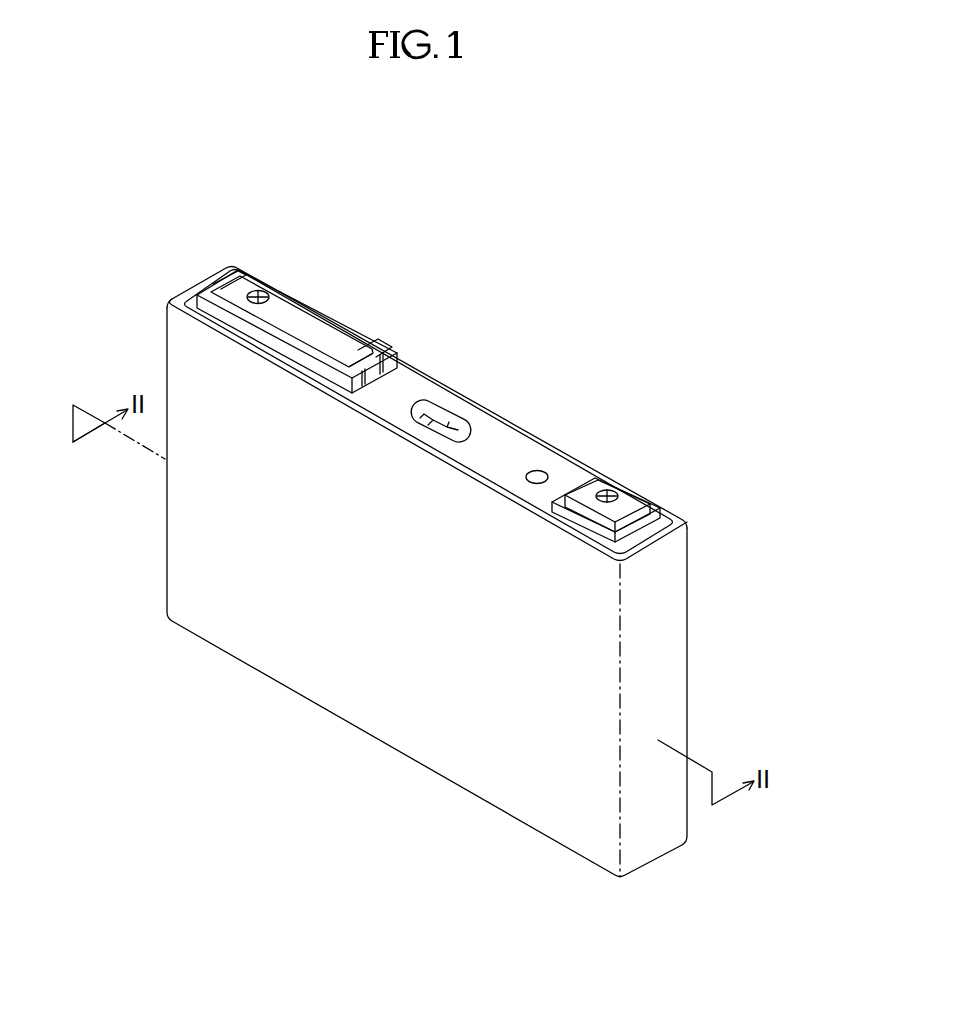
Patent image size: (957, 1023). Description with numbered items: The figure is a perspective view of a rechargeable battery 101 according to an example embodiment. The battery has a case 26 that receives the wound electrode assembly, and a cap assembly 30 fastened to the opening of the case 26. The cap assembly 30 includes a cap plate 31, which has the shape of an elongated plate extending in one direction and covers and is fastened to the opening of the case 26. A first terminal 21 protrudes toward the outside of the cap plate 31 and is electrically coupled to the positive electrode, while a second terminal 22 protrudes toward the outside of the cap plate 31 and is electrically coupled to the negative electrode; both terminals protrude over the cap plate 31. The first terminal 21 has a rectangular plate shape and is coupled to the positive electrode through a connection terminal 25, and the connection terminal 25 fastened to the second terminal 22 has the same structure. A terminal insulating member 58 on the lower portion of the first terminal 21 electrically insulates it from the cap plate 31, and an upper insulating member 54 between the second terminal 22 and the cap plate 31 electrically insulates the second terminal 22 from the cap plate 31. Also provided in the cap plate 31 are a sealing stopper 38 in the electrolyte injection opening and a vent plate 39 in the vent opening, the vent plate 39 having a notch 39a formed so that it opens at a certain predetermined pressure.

The rechargeable battery 101 is at (482, 229).
The first terminal 21 is at (632, 500).
The second terminal 22 is at (300, 312).
The connection terminal 25 is at (261, 290).
The case 26 is at (378, 708).
The cap assembly 30 is at (519, 427).
The cap plate 31 is at (403, 383).
The sealing stopper 38 is at (540, 470).
The vent plate 39 is at (430, 411).
The notch 39a is at (455, 430).
The upper insulating member 54 is at (362, 334).
The terminal insulating member 58 is at (654, 504).